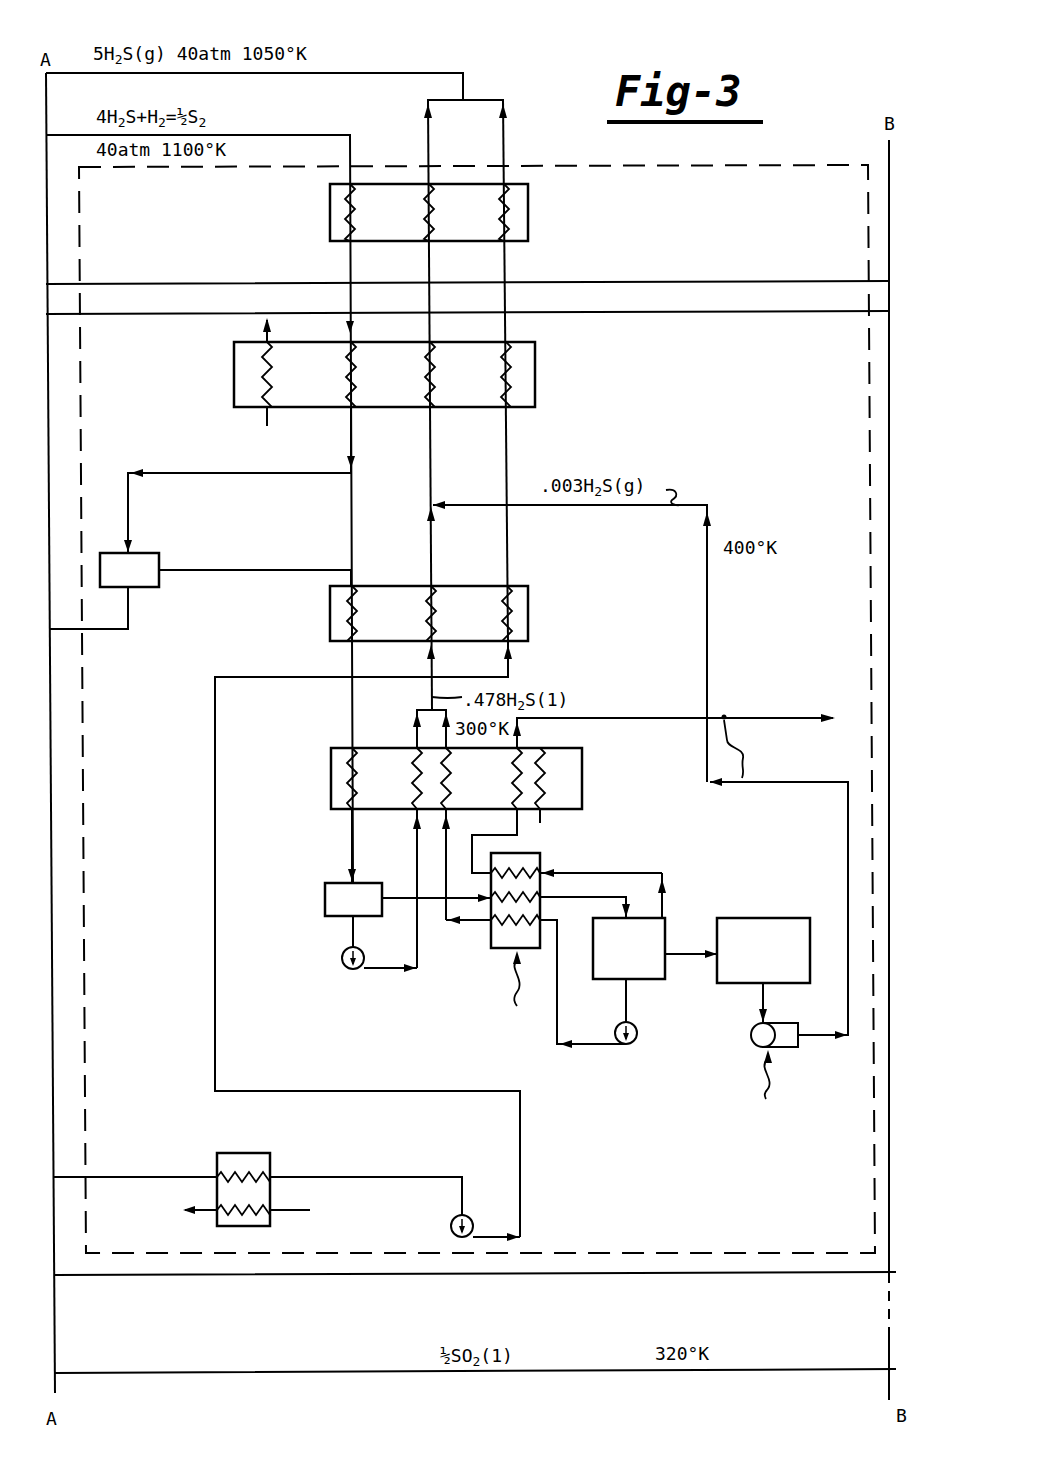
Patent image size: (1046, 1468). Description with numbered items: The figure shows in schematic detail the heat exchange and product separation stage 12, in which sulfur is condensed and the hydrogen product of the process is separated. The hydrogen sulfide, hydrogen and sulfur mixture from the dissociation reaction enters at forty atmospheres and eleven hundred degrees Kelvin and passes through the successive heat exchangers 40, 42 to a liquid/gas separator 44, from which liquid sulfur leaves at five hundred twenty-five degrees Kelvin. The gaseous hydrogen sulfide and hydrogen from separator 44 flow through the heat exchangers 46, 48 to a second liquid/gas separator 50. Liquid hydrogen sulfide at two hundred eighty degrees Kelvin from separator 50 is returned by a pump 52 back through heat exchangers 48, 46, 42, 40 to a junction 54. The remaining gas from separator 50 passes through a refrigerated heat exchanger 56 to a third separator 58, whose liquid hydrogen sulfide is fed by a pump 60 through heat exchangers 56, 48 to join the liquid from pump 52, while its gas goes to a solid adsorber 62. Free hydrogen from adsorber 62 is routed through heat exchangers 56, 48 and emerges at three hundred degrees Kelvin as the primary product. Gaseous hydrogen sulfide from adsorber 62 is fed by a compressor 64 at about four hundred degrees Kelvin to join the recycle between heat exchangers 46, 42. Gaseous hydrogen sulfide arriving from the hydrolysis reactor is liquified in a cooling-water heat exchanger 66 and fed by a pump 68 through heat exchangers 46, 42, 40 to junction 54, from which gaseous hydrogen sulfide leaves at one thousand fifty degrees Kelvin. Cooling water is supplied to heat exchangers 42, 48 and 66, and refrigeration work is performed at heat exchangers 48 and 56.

The heat exchange and product separation stage 12 is at (586, 118).
The heat exchanger 40 is at (528, 218).
The heat exchanger 42 is at (535, 376).
The liquid/gas separator 44 is at (158, 553).
The heat exchanger 46 is at (330, 608).
The heat exchanger 48 is at (331, 748).
The liquid/gas separator 50 is at (325, 900).
The pump 52 is at (342, 956).
The junction 54 is at (463, 100).
The heat exchanger 56 is at (540, 853).
The separator 58 is at (666, 900).
The pump 60 is at (637, 1028).
The solid adsorber 62 is at (780, 918).
The compressor 64 is at (790, 1047).
The heat exchanger 66 is at (217, 1165).
The pump 68 is at (473, 1222).